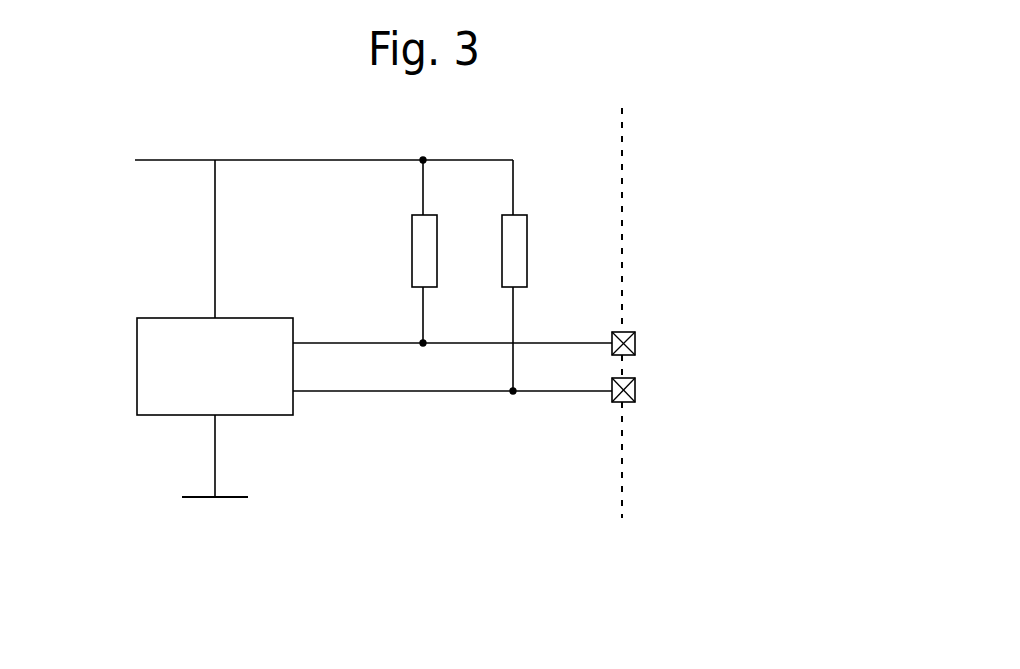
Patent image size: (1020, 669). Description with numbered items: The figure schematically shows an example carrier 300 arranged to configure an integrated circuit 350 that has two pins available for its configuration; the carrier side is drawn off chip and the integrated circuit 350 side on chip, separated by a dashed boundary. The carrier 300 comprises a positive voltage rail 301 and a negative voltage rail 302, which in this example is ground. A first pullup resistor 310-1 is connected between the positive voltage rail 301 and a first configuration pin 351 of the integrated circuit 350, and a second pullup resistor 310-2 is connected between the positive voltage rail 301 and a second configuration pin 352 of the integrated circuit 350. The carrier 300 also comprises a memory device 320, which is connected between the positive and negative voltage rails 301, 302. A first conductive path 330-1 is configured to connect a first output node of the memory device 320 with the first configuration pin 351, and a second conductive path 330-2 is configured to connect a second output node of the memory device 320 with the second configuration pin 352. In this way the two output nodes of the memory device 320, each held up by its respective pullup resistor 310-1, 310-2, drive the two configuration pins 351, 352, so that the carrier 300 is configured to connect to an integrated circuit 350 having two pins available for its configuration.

The carrier 300 is at (684, 559).
The positive voltage rail 301 is at (308, 160).
The negative voltage rail 302 is at (190, 533).
The first pullup resistor 310-1 is at (412, 250).
The second pullup resistor 310-2 is at (570, 240).
The memory device 320 is at (137, 352).
The first conductive path 330-1 is at (343, 343).
The second conductive path 330-2 is at (475, 391).
The integrated circuit 350 is at (705, 190).
The first configuration pin 351 is at (635, 343).
The second configuration pin 352 is at (635, 391).